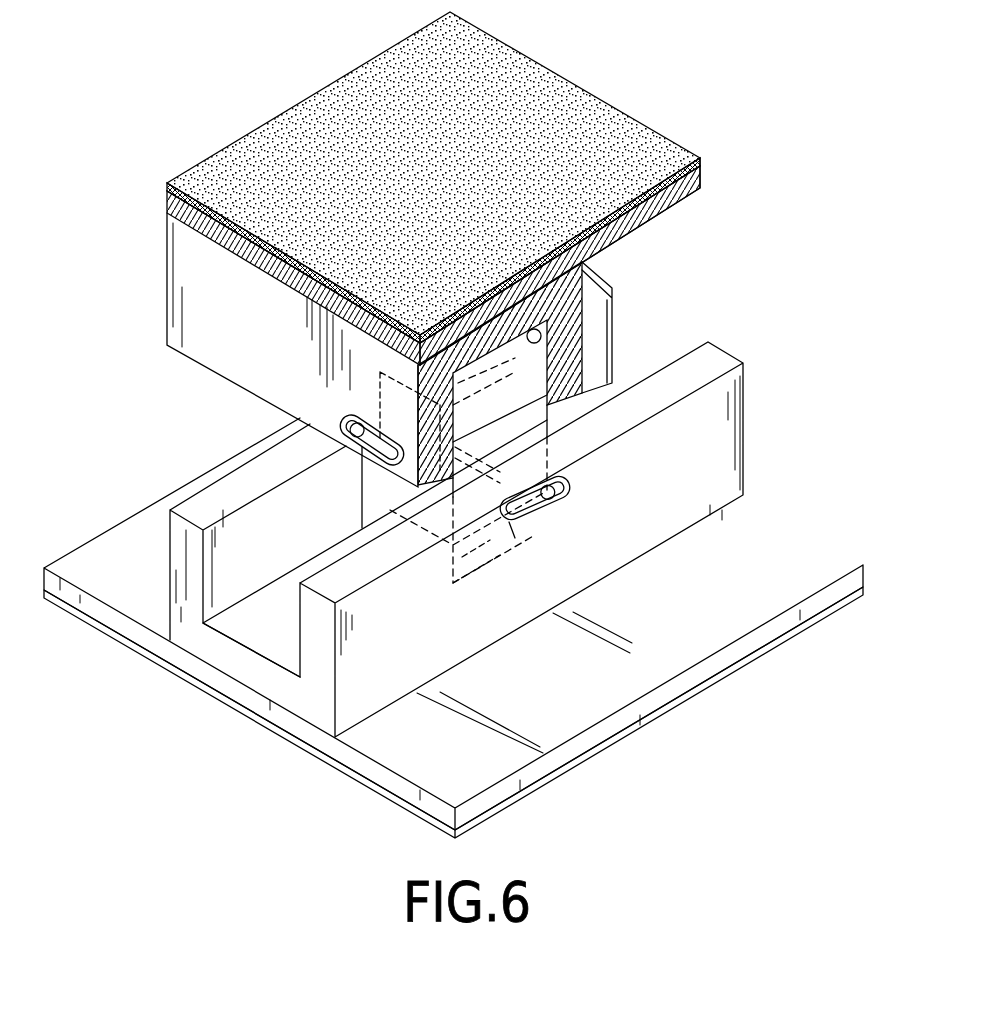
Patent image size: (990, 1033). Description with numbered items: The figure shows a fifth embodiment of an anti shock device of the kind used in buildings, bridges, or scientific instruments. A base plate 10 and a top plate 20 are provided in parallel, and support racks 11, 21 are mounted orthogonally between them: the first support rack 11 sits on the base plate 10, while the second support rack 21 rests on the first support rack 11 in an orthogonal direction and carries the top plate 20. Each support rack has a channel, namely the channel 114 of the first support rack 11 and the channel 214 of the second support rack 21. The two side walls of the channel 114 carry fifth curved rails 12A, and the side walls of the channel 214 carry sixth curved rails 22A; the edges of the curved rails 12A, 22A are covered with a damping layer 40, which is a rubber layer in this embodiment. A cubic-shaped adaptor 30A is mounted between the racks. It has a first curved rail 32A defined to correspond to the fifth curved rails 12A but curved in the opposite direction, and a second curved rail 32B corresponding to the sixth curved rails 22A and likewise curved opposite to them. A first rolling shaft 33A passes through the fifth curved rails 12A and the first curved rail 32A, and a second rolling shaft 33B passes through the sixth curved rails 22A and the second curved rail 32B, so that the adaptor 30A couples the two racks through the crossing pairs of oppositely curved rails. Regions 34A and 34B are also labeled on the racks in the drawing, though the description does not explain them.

The base plate 10 is at (856, 551).
The first support rack 11 is at (760, 363).
The channel 114 is at (250, 613).
The fifth curved rail 12A is at (572, 488).
The top plate 20 is at (705, 200).
The second support rack 21 is at (560, 288).
The channel 214 is at (540, 342).
The sixth curved rail 22A is at (345, 422).
The adaptor 30A is at (512, 438).
The first curved rail 32A is at (488, 537).
The second curved rail 32B is at (383, 374).
The first rolling shaft 33A is at (541, 528).
The second rolling shaft 33B is at (365, 436).
The groove 34A is at (375, 512).
The groove 34B is at (532, 405).
The damping layer 40 is at (780, 643).